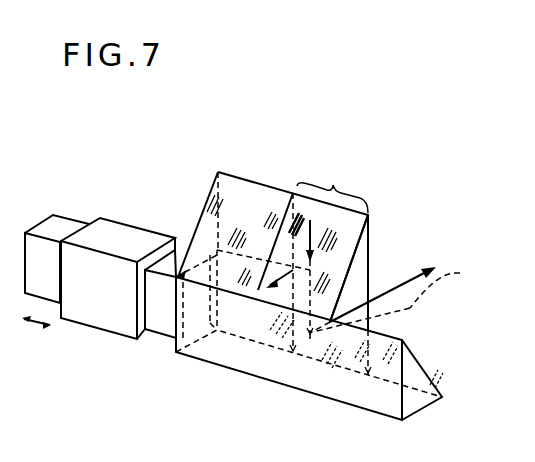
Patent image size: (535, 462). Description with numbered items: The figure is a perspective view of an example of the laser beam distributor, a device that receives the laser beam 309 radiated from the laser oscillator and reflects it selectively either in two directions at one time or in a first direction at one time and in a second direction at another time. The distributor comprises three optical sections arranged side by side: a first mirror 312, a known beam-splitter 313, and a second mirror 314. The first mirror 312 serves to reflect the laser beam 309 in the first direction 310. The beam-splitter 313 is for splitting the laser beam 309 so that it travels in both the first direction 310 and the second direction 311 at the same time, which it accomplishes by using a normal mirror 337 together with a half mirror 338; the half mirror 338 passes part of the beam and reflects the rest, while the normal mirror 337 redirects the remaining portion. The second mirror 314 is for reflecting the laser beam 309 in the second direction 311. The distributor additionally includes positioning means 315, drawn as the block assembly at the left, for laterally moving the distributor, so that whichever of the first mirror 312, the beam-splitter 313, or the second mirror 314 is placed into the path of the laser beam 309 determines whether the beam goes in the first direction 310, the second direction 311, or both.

The laser beam 309 is at (342, 255).
The first direction 310 is at (286, 268).
The second direction 311 is at (409, 275).
The first mirror 312 is at (236, 207).
The beam-splitter 313 is at (332, 189).
The second mirror 314 is at (403, 340).
The positioning means 315 is at (121, 232).
The normal mirror 337 is at (406, 297).
The half mirror 338 is at (368, 226).